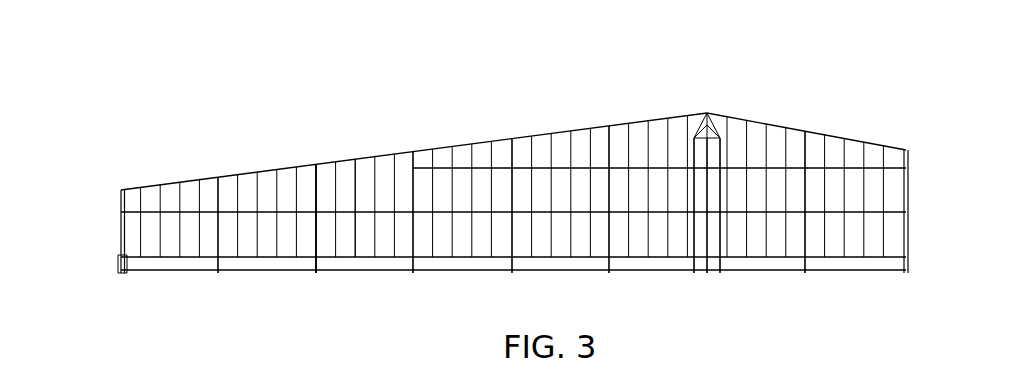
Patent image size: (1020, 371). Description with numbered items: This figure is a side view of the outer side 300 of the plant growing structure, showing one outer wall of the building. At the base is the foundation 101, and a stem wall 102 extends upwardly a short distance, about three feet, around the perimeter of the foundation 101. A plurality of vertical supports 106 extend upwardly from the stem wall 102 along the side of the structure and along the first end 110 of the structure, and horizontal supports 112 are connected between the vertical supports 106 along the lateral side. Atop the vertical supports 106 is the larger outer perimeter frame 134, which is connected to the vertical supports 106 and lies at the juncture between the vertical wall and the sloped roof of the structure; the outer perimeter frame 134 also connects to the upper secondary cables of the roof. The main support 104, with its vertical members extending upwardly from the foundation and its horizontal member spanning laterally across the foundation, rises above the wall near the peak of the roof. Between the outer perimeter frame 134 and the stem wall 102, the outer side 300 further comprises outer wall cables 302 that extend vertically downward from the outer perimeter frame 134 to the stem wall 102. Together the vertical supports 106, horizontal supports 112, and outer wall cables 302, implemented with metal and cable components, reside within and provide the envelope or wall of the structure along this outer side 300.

The outer side 300 is at (337, 115).
The first end 110 is at (118, 232).
The outer perimeter frame 134 is at (505, 138).
The main support 104 is at (710, 126).
The vertical supports 106 is at (315, 238).
The outer wall cables 302 is at (355, 222).
The horizontal supports 112 is at (444, 213).
The foundation 101 is at (642, 271).
The stem wall 102 is at (833, 262).